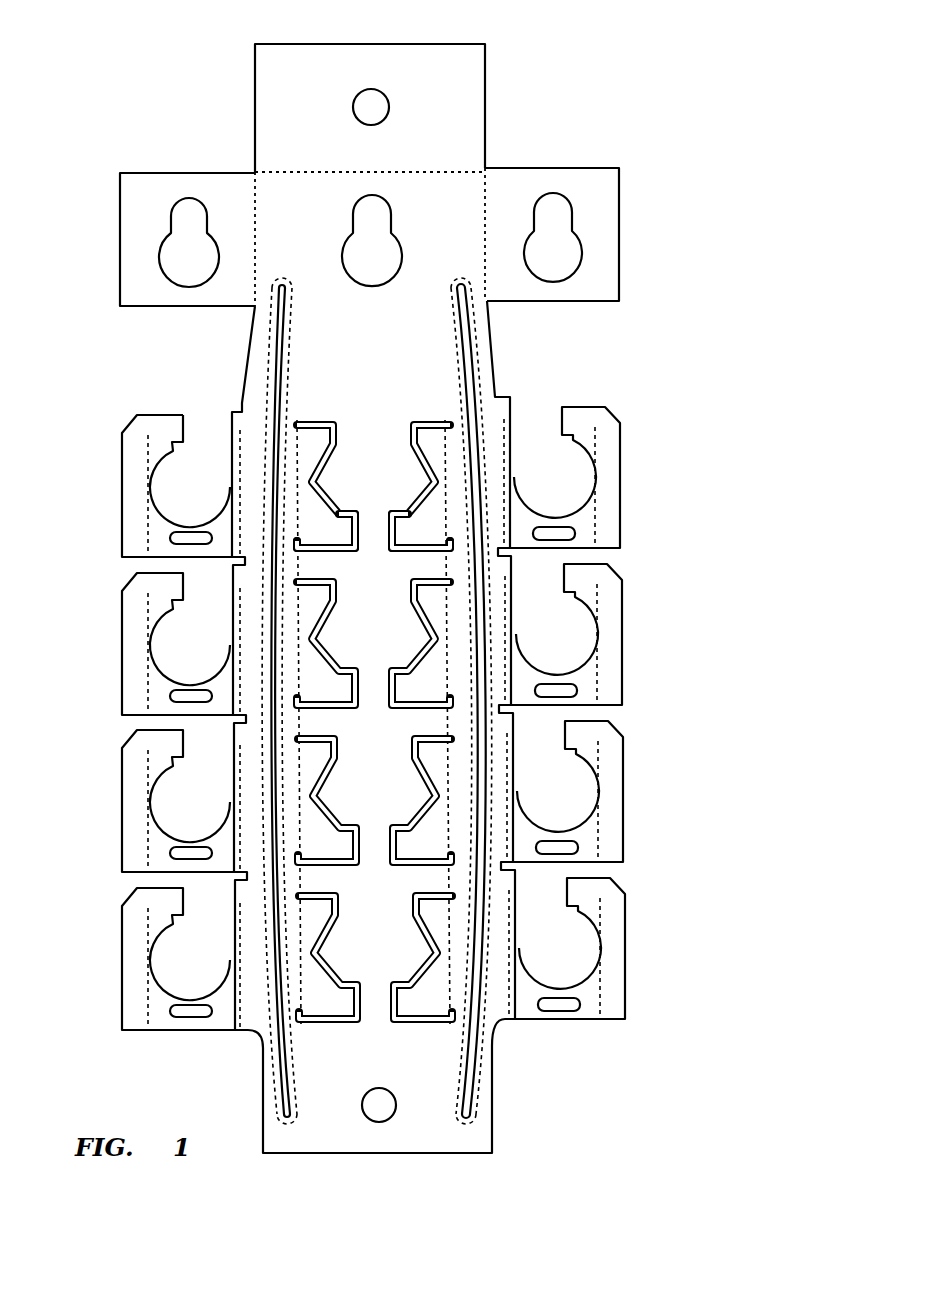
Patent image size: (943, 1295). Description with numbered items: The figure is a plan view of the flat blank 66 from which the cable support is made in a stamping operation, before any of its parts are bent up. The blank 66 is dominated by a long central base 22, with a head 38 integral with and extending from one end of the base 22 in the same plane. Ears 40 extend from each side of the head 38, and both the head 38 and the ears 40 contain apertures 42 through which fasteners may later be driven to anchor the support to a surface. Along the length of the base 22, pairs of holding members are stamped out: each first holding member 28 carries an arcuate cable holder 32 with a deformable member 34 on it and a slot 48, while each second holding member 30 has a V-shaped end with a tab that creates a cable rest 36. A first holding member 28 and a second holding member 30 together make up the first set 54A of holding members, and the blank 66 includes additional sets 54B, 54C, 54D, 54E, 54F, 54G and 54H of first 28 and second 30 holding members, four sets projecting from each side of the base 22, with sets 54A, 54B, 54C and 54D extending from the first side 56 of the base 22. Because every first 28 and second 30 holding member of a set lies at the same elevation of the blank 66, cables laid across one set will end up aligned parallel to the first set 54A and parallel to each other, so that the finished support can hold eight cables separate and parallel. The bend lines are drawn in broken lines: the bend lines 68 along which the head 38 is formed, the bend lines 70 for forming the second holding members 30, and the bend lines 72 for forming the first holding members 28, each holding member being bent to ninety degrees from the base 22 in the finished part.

The base 22 is at (395, 1066).
The first holding member 28 is at (369, 735).
The second holding member 30 is at (373, 531).
The arcuate cable holder 32 is at (163, 507).
The deformable member 34 is at (127, 457).
The cable rest 36 is at (317, 640).
The head 38 is at (470, 217).
The ears 40 is at (293, 74).
The apertures 42 is at (371, 104).
The slot 48 is at (553, 1012).
The first set of holding members 54A is at (166, 430).
The additional set of holding members 54B is at (437, 629).
The additional set of holding members 54C is at (167, 747).
The additional set of holding members 54D is at (578, 897).
The additional set of holding members 54E is at (343, 513).
The additional set of holding members 54F is at (398, 690).
The additional set of holding members 54G is at (345, 835).
The additional set of holding members 54H is at (412, 1003).
The first side of the base 56 is at (438, 359).
The blank 66 is at (707, 557).
The bend lines for forming the head 68 is at (445, 167).
The bend lines for forming the second holding members 70 is at (475, 430).
The bend lines for forming the first holding members 72 is at (508, 428).